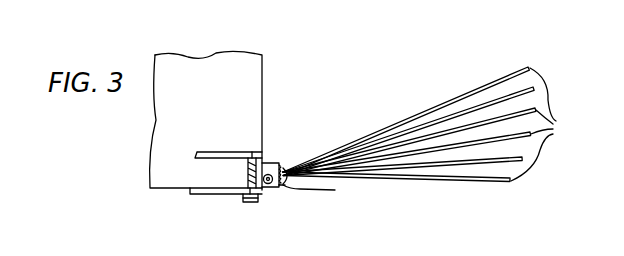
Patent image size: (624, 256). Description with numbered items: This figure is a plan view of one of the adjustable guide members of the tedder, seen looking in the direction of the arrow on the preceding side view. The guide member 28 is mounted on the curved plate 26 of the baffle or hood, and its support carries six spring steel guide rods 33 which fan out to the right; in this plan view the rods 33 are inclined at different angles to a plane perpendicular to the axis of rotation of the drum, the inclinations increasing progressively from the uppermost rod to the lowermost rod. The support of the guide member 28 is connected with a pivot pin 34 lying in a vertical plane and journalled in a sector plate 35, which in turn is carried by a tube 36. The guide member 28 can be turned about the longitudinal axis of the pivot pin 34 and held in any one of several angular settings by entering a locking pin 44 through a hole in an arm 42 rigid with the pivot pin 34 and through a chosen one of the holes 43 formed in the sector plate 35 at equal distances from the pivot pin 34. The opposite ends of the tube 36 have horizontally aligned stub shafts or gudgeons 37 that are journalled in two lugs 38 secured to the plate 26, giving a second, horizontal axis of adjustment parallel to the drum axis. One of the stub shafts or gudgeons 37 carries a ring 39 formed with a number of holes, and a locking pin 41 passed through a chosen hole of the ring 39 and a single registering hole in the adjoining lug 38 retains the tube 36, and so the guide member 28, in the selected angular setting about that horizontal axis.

The curved plate 26 is at (208, 54).
The guide member 28 is at (438, 104).
The spring steel guide rods 33 is at (543, 124).
The pivot pin 34 is at (269, 186).
The sector plate 35 is at (264, 163).
The tube 36 is at (248, 174).
The stub shafts or gudgeons 37 is at (252, 151).
The lugs 38 is at (196, 157).
The ring 39 is at (258, 203).
The locking pin 41 is at (243, 204).
The arm 42 is at (280, 188).
The holes 43 is at (285, 168).
The locking pin 44 is at (319, 195).